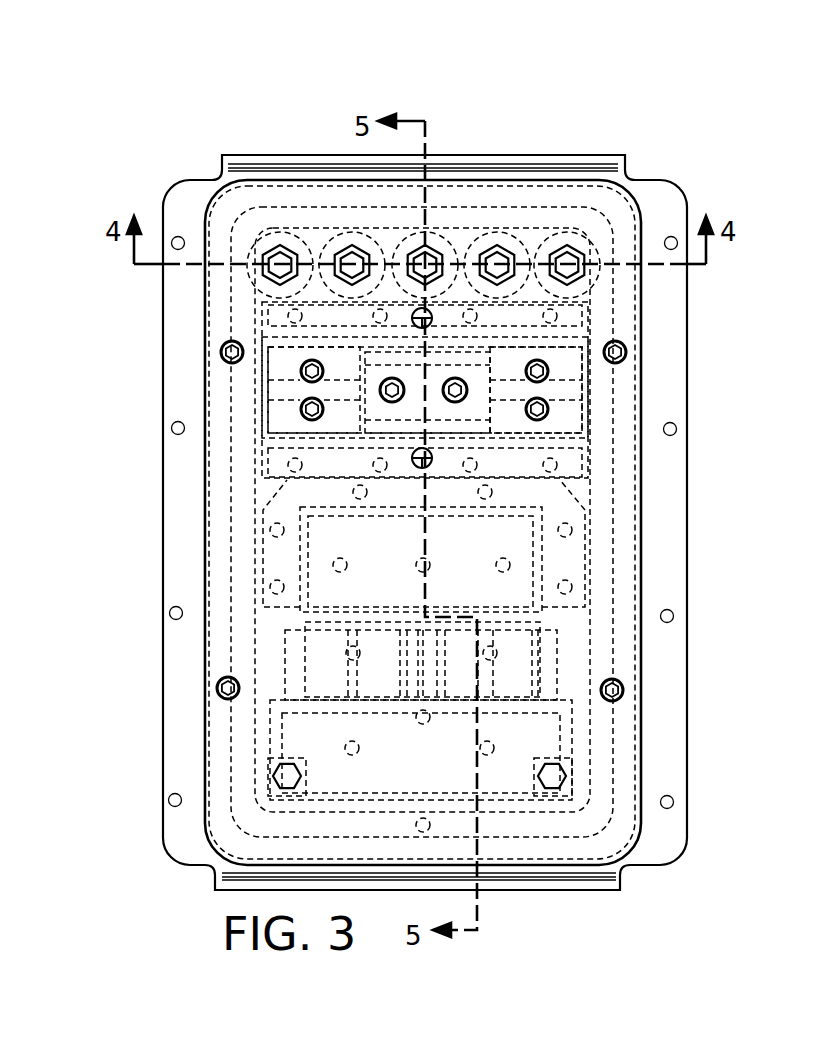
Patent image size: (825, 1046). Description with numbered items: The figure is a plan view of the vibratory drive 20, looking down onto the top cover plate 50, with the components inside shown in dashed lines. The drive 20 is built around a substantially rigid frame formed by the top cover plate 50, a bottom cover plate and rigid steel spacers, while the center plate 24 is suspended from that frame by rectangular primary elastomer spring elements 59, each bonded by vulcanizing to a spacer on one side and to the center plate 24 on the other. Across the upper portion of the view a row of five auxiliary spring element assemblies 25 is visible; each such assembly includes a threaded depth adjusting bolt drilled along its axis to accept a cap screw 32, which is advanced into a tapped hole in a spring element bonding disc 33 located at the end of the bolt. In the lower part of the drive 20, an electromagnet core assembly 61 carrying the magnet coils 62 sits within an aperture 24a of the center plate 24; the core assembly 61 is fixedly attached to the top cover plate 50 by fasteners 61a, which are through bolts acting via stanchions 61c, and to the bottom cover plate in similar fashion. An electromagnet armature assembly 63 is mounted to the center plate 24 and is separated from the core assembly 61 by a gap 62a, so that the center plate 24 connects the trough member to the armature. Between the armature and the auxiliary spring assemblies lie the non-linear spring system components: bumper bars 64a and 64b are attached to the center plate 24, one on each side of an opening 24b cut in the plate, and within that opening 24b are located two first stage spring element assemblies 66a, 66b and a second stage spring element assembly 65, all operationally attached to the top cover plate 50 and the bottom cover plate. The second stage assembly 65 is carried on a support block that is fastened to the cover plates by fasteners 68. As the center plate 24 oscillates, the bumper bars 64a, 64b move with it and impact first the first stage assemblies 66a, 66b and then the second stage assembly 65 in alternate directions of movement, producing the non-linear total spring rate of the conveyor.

The drive 20 is at (666, 138).
The center plate 24 is at (688, 722).
The aperture 24a is at (575, 658).
The opening 24b is at (272, 400).
The auxiliary spring element assemblies 25 is at (434, 224).
The cap screw 32 is at (572, 262).
The spring element bonding disc 33 is at (583, 163).
The top cover plate 50 is at (610, 532).
The primary elastomer spring elements 59 is at (622, 818).
The electromagnet core assembly 61 is at (335, 720).
The fasteners 61a is at (273, 776).
The stanchions 61c is at (290, 750).
The magnet coils 62 is at (567, 636).
The gap 62a is at (545, 610).
The electromagnet armature assembly 63 is at (320, 549).
The bumper bar 64a is at (262, 325).
The bumper bar 64b is at (268, 446).
The second stage spring element assembly 65 is at (445, 393).
The first stage spring element assembly 66a is at (550, 370).
The first stage spring element assembly 66b is at (298, 412).
The fasteners 68 is at (398, 383).